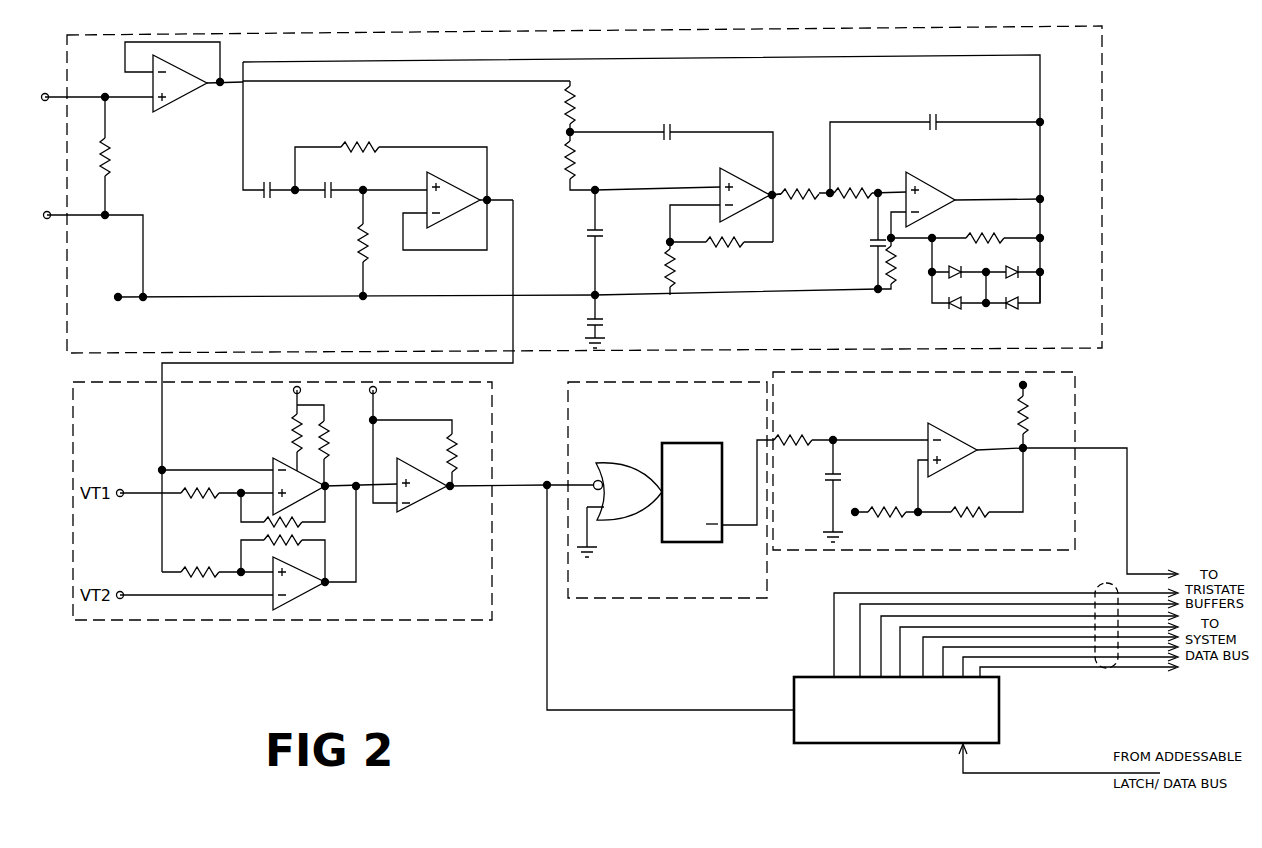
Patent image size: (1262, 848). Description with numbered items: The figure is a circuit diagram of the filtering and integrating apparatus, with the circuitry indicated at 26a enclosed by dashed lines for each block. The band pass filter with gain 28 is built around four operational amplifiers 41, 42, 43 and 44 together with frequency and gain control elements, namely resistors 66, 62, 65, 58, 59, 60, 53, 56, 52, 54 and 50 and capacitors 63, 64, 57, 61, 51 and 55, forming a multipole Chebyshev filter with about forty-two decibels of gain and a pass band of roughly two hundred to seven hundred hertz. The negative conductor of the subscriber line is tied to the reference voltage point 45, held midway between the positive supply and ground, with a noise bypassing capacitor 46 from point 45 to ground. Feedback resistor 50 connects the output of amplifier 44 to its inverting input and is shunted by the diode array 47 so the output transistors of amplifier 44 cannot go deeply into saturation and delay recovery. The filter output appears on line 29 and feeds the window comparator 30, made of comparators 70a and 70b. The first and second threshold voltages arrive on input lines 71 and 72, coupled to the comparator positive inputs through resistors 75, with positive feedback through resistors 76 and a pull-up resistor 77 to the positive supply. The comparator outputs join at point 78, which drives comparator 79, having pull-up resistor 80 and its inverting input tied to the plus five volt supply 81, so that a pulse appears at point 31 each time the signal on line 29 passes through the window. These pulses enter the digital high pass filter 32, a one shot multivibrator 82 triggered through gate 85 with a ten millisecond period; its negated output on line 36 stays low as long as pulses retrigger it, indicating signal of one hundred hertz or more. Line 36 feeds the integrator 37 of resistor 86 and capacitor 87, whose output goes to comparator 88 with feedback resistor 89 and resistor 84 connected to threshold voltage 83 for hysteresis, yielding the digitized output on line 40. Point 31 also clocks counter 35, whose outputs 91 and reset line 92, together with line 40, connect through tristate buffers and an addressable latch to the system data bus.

The band pass filter with gain 28 is at (67, 60).
The amplifier circuit 26a is at (562, 189).
The operational amplifier 41 is at (176, 95).
The resistor 66 is at (112, 157).
The Vref point 45 is at (118, 300).
The resistor 62 is at (378, 147).
The operational amplifier 42 is at (425, 187).
The capacitor 63 is at (262, 193).
The capacitor 64 is at (332, 195).
The resistor 65 is at (359, 245).
The line 29 is at (513, 327).
The resistor 58 is at (564, 105).
The resistor 59 is at (569, 160).
The resistor 60 is at (590, 229).
The capacitor 57 is at (672, 125).
The operational amplifier 43 is at (723, 168).
The resistor 53 is at (812, 172).
The resistor 56 is at (738, 248).
The capacitor 61 is at (666, 268).
The noise bypassing capacitor 46 is at (600, 314).
The capacitor 51 is at (937, 114).
The resistor 52 is at (840, 186).
The operational amplifier 44 is at (920, 175).
The feedback resistor 50 is at (989, 232).
The capacitor 55 is at (872, 248).
The resistor 54 is at (896, 258).
The diode array 47 is at (997, 310).
The window comparator 30 is at (134, 381).
The input line 71 is at (158, 487).
The resistor 75 is at (213, 499).
The input line 72 is at (164, 592).
The comparator 70a is at (272, 458).
The comparator 70b is at (303, 598).
The feedback resistor 76 is at (307, 522).
The pull-up resistor 77 is at (290, 424).
The point 78 is at (356, 482).
The comparator 79 is at (414, 508).
The supply voltage 81 is at (370, 417).
The pull-up resistor 80 is at (454, 438).
The point 31 is at (546, 472).
The digital high pass filter 32 is at (682, 600).
The input triggering gate 85 is at (627, 463).
The one shot multivibrator 82 is at (704, 442).
The line 36 is at (757, 446).
The integrator 37 is at (895, 552).
The resistor 86 is at (839, 438).
The capacitor 87 is at (838, 474).
The threshold voltage 83 is at (855, 516).
The resistor 84 is at (890, 516).
The comparator 88 is at (930, 425).
The feedback resistor 89 is at (972, 513).
The line 40 is at (1127, 526).
The output lines 91 is at (1100, 583).
The counter 35 is at (878, 746).
The reset line 92 is at (1014, 773).